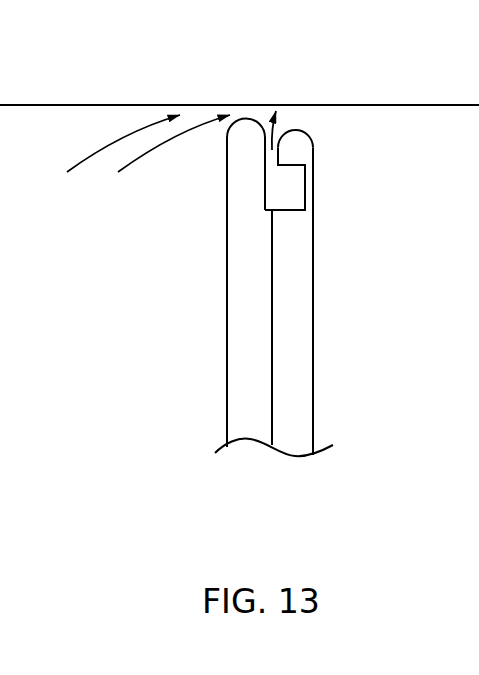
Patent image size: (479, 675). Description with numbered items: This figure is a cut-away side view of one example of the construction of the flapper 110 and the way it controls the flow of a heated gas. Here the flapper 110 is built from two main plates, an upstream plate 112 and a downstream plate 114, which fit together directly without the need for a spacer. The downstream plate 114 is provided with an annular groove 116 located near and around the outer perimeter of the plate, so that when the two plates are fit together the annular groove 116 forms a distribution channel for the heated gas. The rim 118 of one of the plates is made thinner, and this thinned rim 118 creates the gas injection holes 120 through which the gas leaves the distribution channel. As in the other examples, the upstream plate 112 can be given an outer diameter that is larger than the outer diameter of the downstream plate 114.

The flapper 110 is at (271, 239).
The upstream plate 112 is at (248, 358).
The downstream plate 114 is at (288, 350).
The annular groove 116 is at (287, 197).
The rim 118 is at (288, 155).
The gas injection holes 120 is at (277, 105).